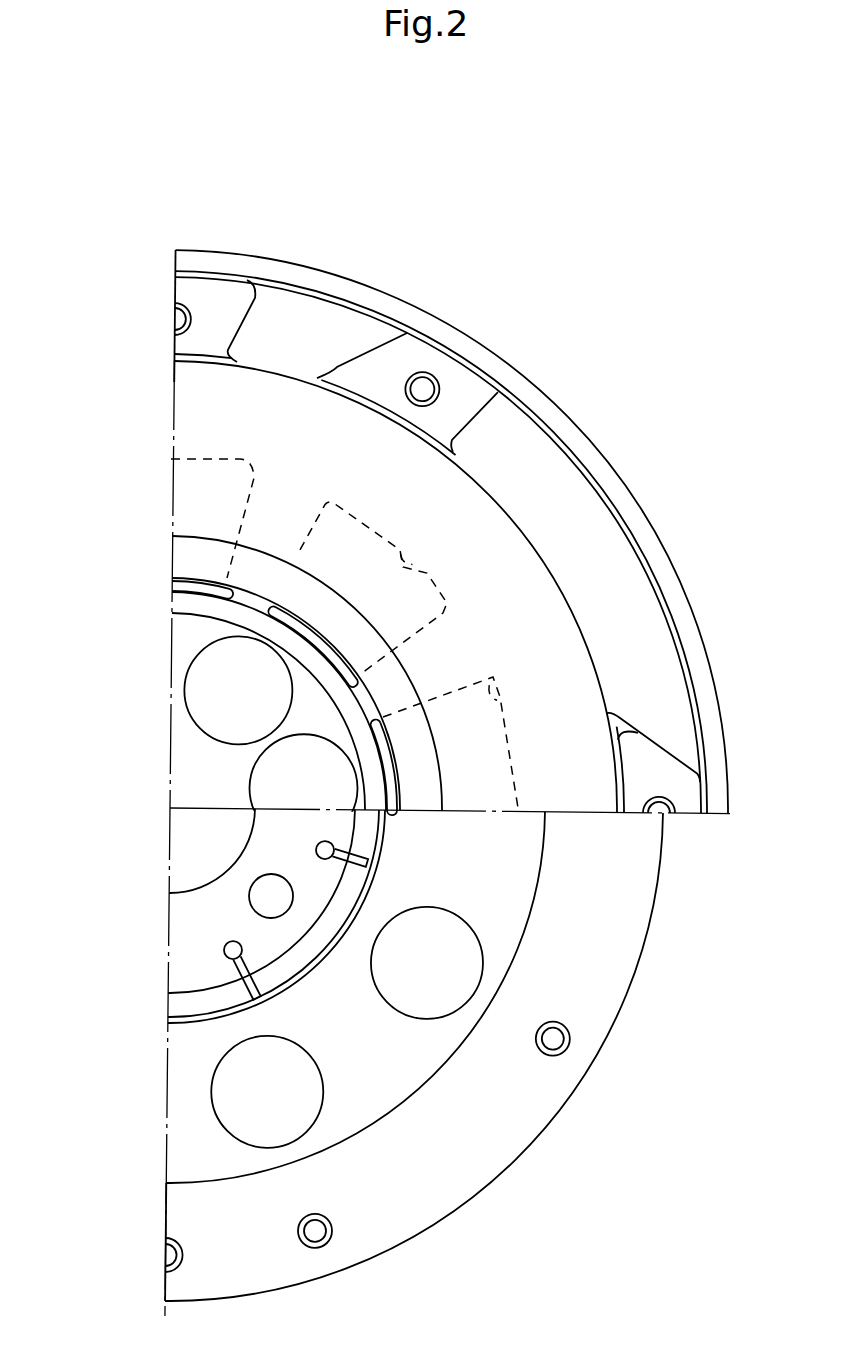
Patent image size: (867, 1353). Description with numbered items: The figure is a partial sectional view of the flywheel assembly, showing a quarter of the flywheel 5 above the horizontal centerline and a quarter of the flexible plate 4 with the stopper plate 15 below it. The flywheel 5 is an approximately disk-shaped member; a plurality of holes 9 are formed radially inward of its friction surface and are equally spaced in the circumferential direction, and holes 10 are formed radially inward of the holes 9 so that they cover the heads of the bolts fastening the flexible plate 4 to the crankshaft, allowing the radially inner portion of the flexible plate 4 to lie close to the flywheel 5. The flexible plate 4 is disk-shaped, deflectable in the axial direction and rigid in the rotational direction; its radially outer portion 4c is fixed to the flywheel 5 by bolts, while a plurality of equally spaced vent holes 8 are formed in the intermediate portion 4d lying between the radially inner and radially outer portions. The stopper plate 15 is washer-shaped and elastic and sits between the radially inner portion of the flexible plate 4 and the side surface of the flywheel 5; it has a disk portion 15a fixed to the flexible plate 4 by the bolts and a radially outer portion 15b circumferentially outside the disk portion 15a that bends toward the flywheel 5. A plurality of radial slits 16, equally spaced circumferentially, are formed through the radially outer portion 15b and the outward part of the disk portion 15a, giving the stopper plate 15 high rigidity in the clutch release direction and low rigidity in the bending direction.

The flexible plate 4 is at (597, 1110).
The radially outer portion 4c is at (183, 1228).
The intermediate portion 4d is at (187, 1098).
The flywheel 5 is at (534, 313).
The vent holes 8 is at (434, 1008).
The holes 9 is at (427, 572).
The holes 10 is at (272, 752).
The stopper plate 15 is at (188, 873).
The disk portion 15a is at (183, 920).
The radially outer portion 15b is at (180, 1007).
The radial slits 16 is at (370, 863).